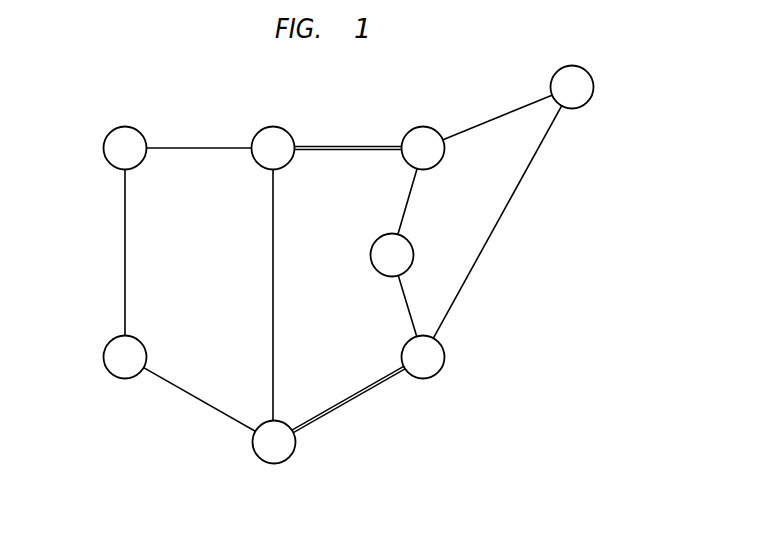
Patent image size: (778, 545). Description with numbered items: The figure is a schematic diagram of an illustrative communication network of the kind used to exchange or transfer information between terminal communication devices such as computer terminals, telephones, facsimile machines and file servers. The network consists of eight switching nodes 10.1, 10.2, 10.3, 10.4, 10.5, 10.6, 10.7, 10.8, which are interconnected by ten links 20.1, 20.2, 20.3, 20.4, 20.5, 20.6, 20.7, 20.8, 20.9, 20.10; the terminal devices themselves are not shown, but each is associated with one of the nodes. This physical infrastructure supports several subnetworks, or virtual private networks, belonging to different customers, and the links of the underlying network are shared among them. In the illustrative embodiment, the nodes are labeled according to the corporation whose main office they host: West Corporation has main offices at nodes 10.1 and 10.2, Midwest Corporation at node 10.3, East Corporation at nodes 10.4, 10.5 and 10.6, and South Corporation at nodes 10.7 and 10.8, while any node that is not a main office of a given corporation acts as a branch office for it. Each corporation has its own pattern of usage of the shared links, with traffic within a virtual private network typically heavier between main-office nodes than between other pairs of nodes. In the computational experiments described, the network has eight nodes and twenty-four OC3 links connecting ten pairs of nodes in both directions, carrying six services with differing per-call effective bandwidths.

The switching node 10.1 is at (108, 371).
The switching node 10.2 is at (108, 162).
The switching node 10.3 is at (258, 162).
The switching node 10.4 is at (408, 163).
The switching node 10.5 is at (592, 73).
The switching node 10.6 is at (377, 271).
The switching node 10.7 is at (445, 352).
The switching node 10.8 is at (258, 459).
The link 20.1 is at (124, 243).
The link 20.2 is at (180, 148).
The link 20.3 is at (329, 146).
The link 20.4 is at (493, 118).
The link 20.5 is at (502, 213).
The link 20.6 is at (410, 197).
The link 20.7 is at (406, 303).
The link 20.8 is at (358, 395).
The link 20.9 is at (272, 279).
The link 20.10 is at (203, 401).